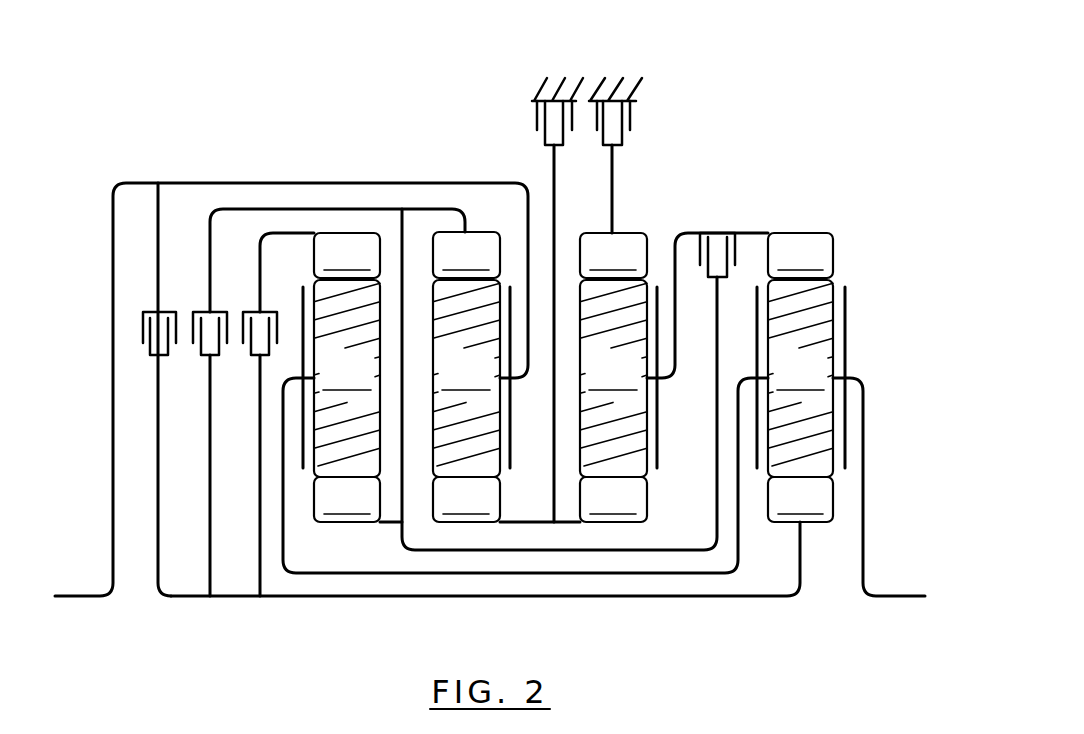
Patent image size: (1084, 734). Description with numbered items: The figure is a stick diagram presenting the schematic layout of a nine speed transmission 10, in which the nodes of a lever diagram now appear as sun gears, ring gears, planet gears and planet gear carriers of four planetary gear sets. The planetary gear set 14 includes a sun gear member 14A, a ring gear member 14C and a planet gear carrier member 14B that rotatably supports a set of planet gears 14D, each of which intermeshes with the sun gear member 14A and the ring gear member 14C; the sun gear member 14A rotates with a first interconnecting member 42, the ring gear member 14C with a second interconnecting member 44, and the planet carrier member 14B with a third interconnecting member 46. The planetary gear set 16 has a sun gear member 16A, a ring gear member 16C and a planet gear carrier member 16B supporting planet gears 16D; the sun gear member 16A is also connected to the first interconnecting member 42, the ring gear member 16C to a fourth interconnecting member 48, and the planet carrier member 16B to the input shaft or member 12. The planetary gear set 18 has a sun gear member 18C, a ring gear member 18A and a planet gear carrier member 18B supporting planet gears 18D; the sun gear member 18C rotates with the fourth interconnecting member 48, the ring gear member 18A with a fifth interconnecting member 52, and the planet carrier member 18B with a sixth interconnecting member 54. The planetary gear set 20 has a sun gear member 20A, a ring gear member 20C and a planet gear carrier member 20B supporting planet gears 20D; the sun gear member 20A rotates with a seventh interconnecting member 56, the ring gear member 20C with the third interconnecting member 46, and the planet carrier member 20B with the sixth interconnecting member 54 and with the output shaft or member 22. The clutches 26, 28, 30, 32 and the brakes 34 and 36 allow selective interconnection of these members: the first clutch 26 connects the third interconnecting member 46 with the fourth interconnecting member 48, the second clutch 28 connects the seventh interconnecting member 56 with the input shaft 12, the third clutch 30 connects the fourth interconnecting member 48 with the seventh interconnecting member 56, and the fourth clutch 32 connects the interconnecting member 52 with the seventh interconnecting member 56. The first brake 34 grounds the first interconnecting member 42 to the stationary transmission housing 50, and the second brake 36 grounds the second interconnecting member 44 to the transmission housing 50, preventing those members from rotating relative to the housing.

The nine speed transmission 10 is at (818, 126).
The input shaft or member 12 is at (158, 207).
The planetary gear set 14 is at (646, 443).
The sun gear member 14A is at (613, 499).
The planet gear carrier member 14B is at (657, 458).
The ring gear member 14C is at (613, 255).
The planet gears 14D is at (613, 378).
The planetary gear set 16 is at (495, 443).
The sun gear member 16A is at (466, 499).
The planet gear carrier member 16B is at (513, 470).
The ring gear member 16C is at (466, 255).
The planet gears 16D is at (466, 378).
The planetary gear set 18 is at (315, 414).
The ring gear member 18A is at (347, 255).
The planet gear carrier member 18B is at (302, 295).
The sun gear member 18C is at (347, 499).
The planet gears 18D is at (347, 378).
The planetary gear set 20 is at (795, 443).
The sun gear member 20A is at (800, 499).
The planet gear carrier member 20B is at (757, 348).
The ring gear member 20C is at (800, 255).
The planet gears 20D is at (800, 378).
The output shaft or member 22 is at (905, 598).
The first clutch 26 is at (735, 252).
The second clutch 28 is at (147, 349).
The third clutch 30 is at (198, 349).
The fourth clutch 32 is at (249, 349).
The first brake 34 is at (537, 122).
The second brake 36 is at (630, 120).
The first shaft or interconnecting member 42 is at (517, 524).
The second shaft or interconnecting member 44 is at (612, 195).
The third shaft or interconnecting member 46 is at (696, 233).
The fourth shaft or interconnecting member 48 is at (324, 208).
The transmission housing 50 is at (601, 100).
The fifth shaft or interconnecting member 52 is at (258, 250).
The sixth shaft or interconnecting member 54 is at (285, 545).
The seventh shaft or interconnecting member 56 is at (157, 562).